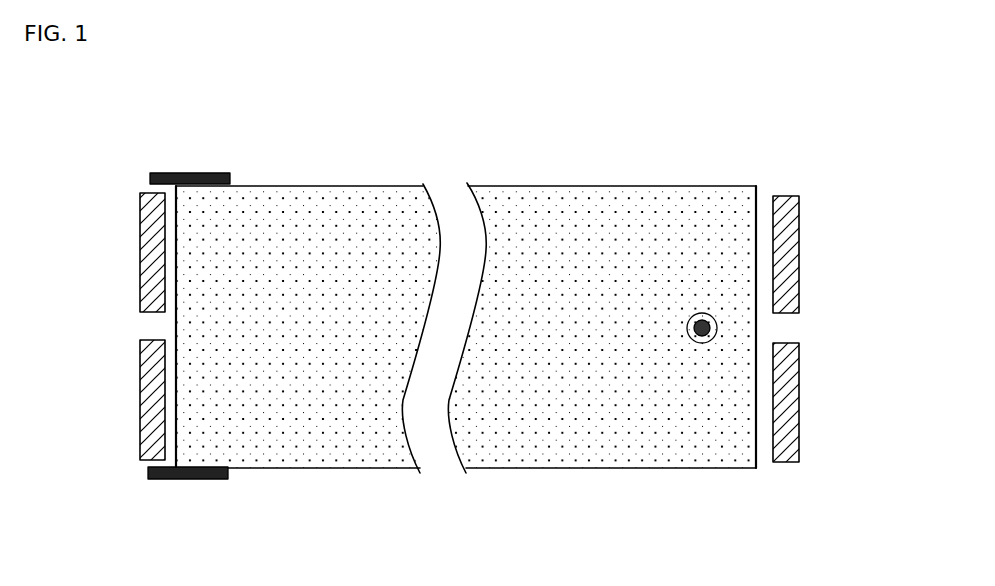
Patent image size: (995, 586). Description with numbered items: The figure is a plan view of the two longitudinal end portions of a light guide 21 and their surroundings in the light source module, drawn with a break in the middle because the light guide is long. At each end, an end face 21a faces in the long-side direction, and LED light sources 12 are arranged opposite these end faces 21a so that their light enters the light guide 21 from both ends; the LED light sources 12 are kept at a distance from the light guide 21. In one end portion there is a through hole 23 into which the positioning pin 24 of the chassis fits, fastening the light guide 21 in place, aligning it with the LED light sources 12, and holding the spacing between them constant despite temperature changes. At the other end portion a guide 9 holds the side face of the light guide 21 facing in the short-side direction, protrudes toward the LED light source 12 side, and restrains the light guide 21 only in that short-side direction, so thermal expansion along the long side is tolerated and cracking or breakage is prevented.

The guide 9 is at (195, 180).
The LED light source 12 is at (141, 357).
The light guide 21 is at (297, 186).
The end face 21a is at (176, 228).
The through hole 23 is at (688, 330).
The positioning pin 24 is at (702, 322).